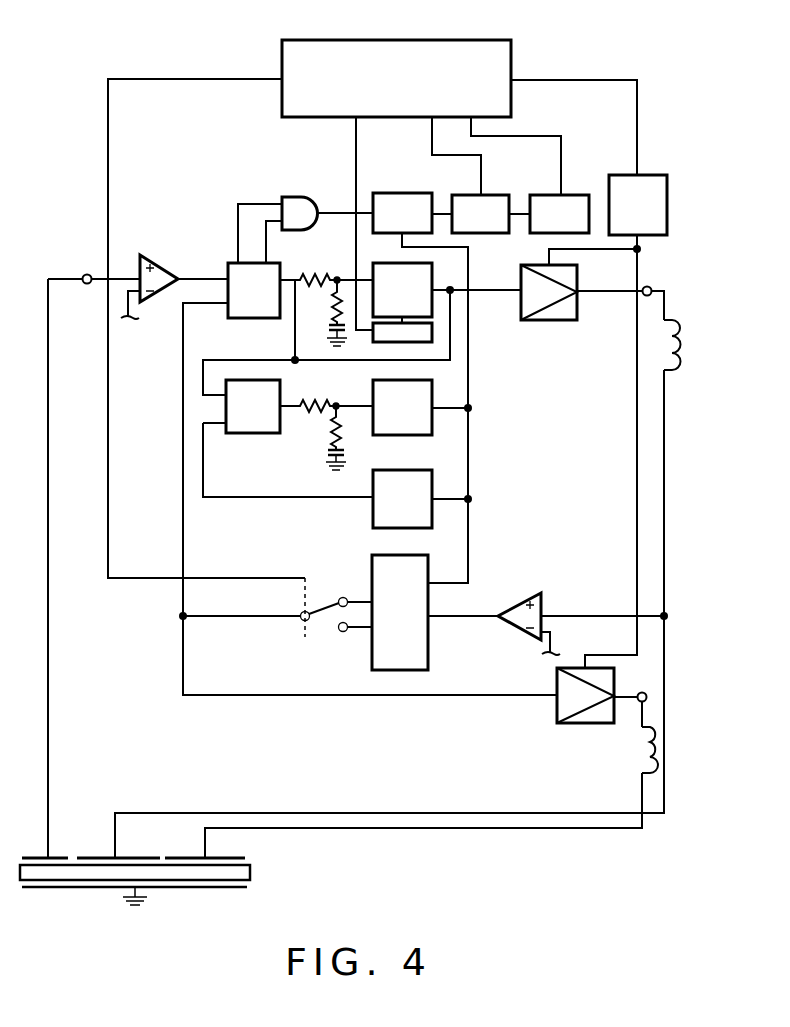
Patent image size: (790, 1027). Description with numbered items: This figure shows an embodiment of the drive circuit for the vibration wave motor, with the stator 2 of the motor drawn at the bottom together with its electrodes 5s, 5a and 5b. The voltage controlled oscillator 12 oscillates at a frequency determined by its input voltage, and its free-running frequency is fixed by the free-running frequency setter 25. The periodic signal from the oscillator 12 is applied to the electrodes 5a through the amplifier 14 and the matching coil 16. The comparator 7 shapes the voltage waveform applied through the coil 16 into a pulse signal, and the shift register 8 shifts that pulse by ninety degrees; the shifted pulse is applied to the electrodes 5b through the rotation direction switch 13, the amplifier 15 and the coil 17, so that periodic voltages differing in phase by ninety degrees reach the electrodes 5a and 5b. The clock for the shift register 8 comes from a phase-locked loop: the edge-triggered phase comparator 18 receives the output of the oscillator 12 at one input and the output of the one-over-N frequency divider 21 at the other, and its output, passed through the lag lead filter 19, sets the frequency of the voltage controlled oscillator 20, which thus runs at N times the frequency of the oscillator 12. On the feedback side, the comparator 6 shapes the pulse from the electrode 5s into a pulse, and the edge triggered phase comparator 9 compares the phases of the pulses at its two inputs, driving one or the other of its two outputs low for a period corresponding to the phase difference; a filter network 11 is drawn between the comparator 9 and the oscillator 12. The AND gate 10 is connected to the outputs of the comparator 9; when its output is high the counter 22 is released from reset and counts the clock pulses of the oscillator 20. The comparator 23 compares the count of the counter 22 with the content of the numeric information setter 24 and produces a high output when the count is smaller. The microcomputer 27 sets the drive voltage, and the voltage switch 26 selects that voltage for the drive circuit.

The stator 2 is at (250, 875).
The electrode 5s is at (48, 857).
The electrodes 5a is at (116, 855).
The electrodes 5b is at (206, 858).
The comparator 6 is at (160, 261).
The comparator 7 is at (518, 594).
The shift register 8 is at (426, 556).
The edge triggered phase comparator 9 is at (227, 260).
The AND gate 10 is at (312, 200).
The RC filter 11 is at (330, 270).
The voltage controlled oscillator 12 is at (380, 270).
The rotation direction switch 13 is at (322, 624).
The amplifier 14 is at (556, 320).
The amplifier 15 is at (580, 723).
The matching coil 16 is at (683, 330).
The coil 17 is at (636, 759).
The edge-triggered phase comparator 18 is at (265, 433).
The lag lead filter 19 is at (328, 398).
The voltage controlled oscillator 20 is at (422, 402).
The 1/N frequency divider 21 is at (422, 486).
The counter 22 is at (410, 196).
The comparator 23 is at (492, 198).
The numeric information setter 24 is at (570, 198).
The free-running frequency setter 25 is at (374, 340).
The voltage switch 26 is at (658, 174).
The microcomputer 27 is at (448, 40).